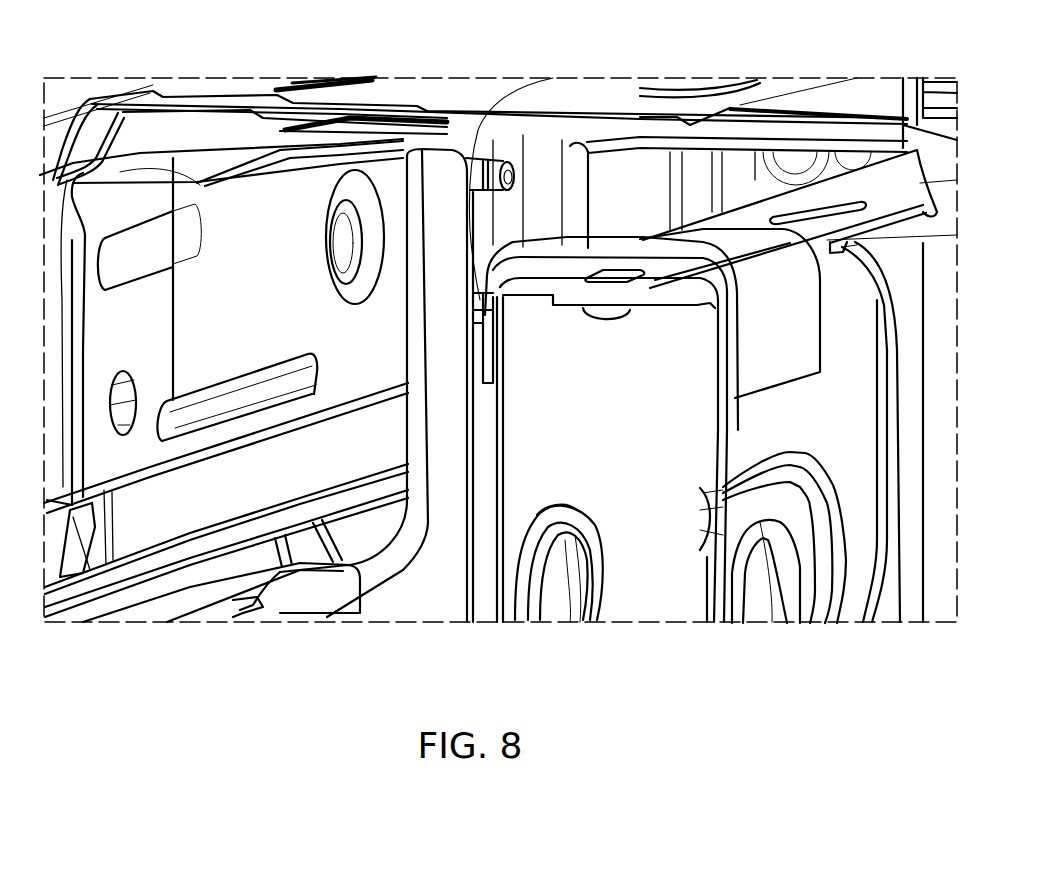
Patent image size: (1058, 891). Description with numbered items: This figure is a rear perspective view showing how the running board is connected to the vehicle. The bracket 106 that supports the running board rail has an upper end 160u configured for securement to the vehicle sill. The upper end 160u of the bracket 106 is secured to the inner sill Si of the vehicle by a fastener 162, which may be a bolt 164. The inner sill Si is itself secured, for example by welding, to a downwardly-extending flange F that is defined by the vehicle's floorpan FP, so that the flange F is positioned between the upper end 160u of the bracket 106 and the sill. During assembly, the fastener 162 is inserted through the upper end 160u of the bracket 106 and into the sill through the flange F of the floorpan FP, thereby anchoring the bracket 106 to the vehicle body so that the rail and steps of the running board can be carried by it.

The floorpan FP is at (253, 236).
The upper end 160u is at (471, 138).
The bolt 164 is at (489, 255).
The fastener 162 is at (547, 163).
The bracket 106 is at (358, 331).
The inner sill Si is at (107, 453).
The flange F is at (223, 350).